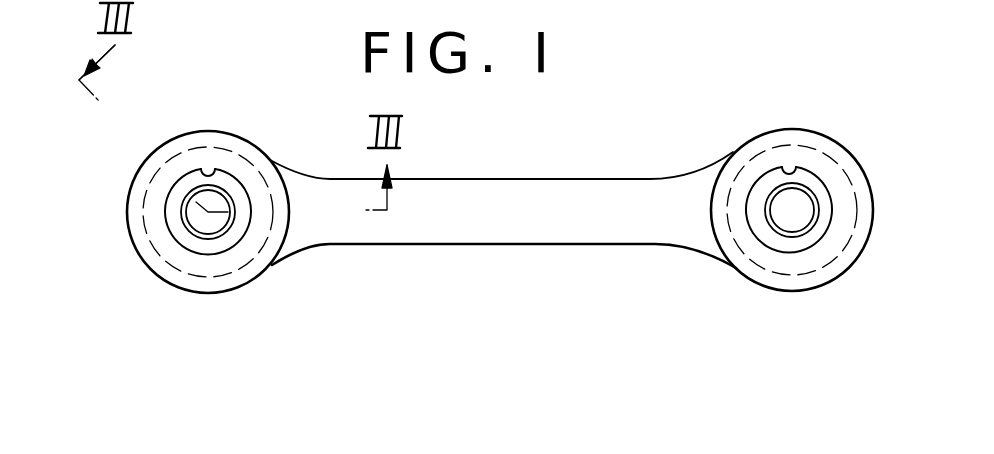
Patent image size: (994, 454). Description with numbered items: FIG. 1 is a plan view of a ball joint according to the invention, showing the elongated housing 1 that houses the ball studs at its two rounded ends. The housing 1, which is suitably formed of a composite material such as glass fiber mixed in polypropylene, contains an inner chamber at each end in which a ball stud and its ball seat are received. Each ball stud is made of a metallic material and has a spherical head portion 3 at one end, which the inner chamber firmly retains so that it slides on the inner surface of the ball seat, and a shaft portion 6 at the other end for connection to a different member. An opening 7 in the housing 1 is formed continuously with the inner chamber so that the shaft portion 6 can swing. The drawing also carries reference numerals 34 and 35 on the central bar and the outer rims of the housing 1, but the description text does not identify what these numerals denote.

The housing 1 is at (515, 179).
The spherical head portion 3 is at (217, 248).
The shaft portion 6 is at (197, 224).
The opening 7 is at (208, 173).
The rod portion 34 is at (482, 245).
The flange 35 is at (190, 294).